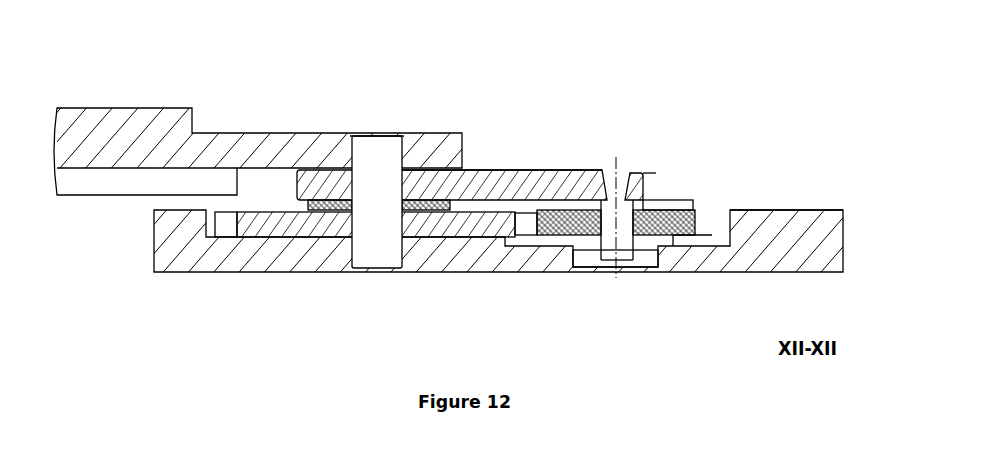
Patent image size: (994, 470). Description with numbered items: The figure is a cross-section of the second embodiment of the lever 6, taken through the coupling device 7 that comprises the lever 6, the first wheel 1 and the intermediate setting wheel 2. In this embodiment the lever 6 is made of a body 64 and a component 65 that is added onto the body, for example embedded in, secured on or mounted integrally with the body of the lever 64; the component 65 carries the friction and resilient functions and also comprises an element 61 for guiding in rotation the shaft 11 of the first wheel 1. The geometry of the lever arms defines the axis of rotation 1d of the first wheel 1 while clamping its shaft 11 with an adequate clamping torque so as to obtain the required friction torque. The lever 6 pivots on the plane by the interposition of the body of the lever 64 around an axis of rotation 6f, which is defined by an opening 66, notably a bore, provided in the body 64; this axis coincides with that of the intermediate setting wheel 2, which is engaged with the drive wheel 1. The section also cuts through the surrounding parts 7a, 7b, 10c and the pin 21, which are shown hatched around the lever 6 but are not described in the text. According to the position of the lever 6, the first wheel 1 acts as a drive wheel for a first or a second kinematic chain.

The upper housing part 7a is at (118, 118).
The lower housing part 7b is at (187, 262).
The coupling device 7 is at (678, 158).
The axis of rotation 6f is at (377, 133).
The pin 21 is at (388, 143).
The opening 66 is at (345, 185).
The component 65 is at (426, 210).
The intermediate setting wheel 2 is at (267, 218).
The lever 6 is at (516, 162).
The body of the lever 64 is at (552, 172).
The element for guiding in rotation of the first shaft 61 is at (606, 177).
The axis of rotation of the first wheel 1d is at (616, 157).
The shaft 11 is at (628, 178).
The first wheel 1 is at (705, 204).
The holder 10c is at (592, 202).